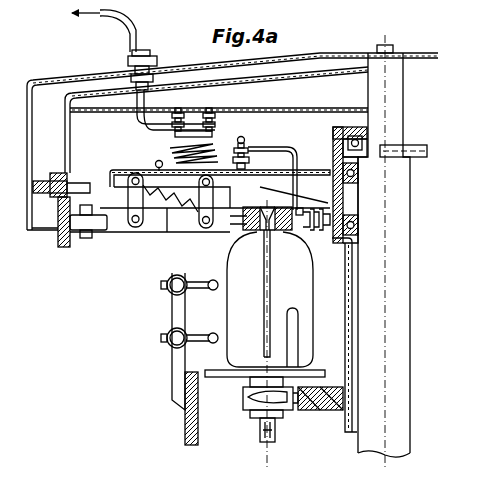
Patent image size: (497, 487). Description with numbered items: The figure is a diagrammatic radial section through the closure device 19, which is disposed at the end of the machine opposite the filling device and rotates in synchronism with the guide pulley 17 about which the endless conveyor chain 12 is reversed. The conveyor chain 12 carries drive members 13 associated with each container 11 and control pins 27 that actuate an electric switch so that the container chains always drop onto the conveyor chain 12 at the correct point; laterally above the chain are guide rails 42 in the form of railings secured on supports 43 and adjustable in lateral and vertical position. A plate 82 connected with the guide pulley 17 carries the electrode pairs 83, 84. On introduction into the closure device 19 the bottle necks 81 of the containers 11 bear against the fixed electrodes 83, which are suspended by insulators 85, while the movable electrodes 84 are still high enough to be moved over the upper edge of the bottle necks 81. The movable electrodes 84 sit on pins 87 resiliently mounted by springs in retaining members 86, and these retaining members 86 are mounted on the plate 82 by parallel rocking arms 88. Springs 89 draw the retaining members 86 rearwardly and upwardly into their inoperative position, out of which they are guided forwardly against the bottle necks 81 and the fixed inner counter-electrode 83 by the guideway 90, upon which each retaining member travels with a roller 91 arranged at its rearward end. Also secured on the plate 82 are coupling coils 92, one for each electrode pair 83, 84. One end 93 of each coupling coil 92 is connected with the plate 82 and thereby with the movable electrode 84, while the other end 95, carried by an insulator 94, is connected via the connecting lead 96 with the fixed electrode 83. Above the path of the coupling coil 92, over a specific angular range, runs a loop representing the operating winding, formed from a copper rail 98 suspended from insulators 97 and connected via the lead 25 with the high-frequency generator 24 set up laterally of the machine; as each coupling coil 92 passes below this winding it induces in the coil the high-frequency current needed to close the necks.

The high-frequency generator 24 is at (70, 15).
The lead 25 is at (129, 31).
The insulators 97 is at (210, 111).
The copper rail 98 is at (213, 137).
The other end of coupling coil 95 is at (244, 138).
The insulator 94 is at (250, 160).
The connecting lead 96 is at (292, 148).
The one end of coupling coil 93 is at (156, 162).
The coupling coil 92 is at (171, 149).
The plate 82 is at (112, 172).
The pins 87 is at (238, 218).
The insulators 85 is at (294, 197).
The springs 89 is at (150, 197).
The parallel rocking arms 88 is at (200, 212).
The movable electrodes 84 is at (256, 229).
The fixed electrodes 83 is at (319, 231).
The bottle necks 81 is at (265, 238).
The guideway 90 is at (60, 232).
The roller 91 is at (87, 233).
The retaining members 86 is at (118, 220).
The closure device 19 is at (116, 260).
The supports 43 is at (172, 313).
The guide rails 42 is at (212, 333).
The containers 11 is at (300, 285).
The drive members 13 is at (296, 338).
The conveyor chain 12 is at (246, 414).
The control pins 27 is at (275, 428).
The guide pulley 17 is at (327, 411).